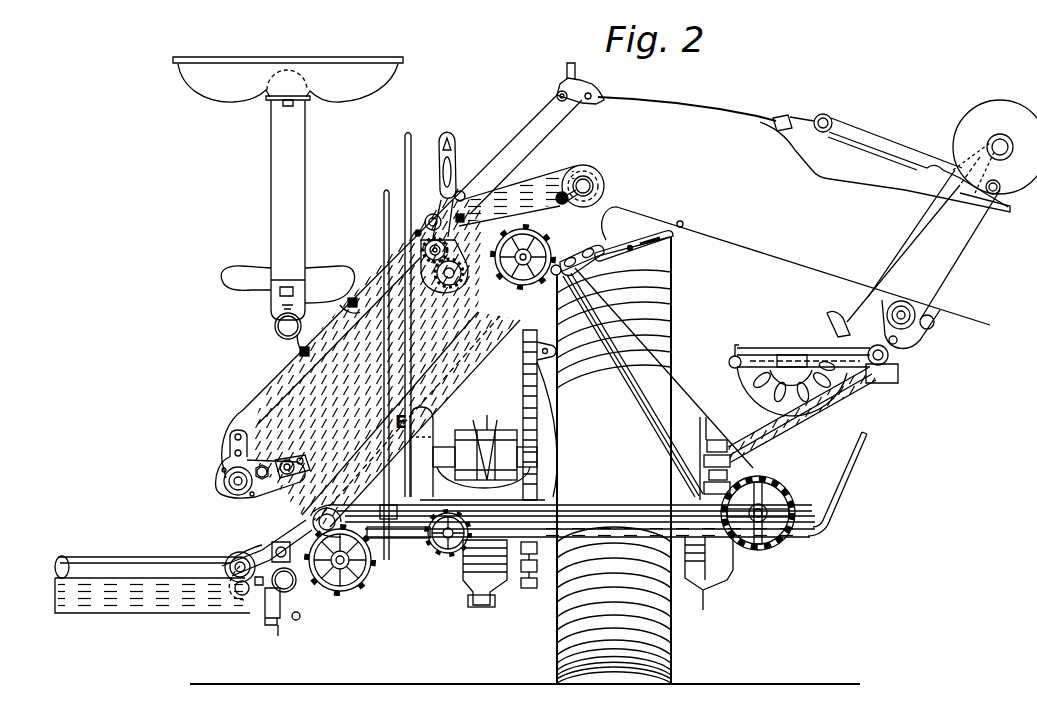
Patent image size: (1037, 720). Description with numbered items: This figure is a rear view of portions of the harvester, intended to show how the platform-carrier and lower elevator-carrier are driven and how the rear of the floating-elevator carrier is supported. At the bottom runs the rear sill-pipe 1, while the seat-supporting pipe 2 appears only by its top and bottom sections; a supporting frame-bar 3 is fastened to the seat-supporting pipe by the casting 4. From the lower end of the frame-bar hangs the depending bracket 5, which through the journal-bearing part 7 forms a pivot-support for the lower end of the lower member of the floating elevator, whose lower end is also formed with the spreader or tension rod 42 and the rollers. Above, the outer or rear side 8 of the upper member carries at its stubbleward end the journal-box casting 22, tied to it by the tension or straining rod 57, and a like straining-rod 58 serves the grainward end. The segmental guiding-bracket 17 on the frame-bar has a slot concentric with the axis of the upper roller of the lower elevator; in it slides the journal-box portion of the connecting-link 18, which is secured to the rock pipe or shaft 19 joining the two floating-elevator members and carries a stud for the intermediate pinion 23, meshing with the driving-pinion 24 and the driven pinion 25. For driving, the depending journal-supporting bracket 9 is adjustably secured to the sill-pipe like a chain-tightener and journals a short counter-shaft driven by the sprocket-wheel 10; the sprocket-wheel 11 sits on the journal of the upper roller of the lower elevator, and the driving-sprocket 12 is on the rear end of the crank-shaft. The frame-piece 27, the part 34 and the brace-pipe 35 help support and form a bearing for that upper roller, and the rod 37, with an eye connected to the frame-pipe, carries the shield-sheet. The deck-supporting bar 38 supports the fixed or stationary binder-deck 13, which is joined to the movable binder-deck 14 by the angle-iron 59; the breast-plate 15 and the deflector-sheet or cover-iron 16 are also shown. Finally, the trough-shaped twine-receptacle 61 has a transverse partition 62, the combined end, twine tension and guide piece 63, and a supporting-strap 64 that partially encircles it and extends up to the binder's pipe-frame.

The rear sill-pipe 1 is at (158, 575).
The seat-supporting pipe 2 is at (276, 327).
The supporting frame-bar 3 is at (246, 406).
The casting 4 is at (288, 206).
The depending bracket 5 is at (229, 453).
The journal-bearing part 7 is at (228, 488).
The outer or rear side of the upper member of the floating elevator 8 is at (531, 191).
The depending journal-supporting bracket 9 is at (306, 522).
The sprocket-wheel 10 is at (340, 571).
The sprocket-wheel 11 is at (511, 257).
The driving-sprocket 12 is at (768, 513).
The fixed or stationary binder-deck 13 is at (619, 216).
The movable binder-deck 14 is at (803, 266).
The breast-plate 15 is at (898, 224).
The deflector-sheet or cover-iron 16 is at (695, 108).
The segmental guiding-bracket 17 is at (441, 138).
The connecting-link 18 is at (445, 215).
The rock pipe or shaft 19 is at (397, 375).
The journal-box casting 22 is at (620, 180).
The intermediate pinion 23 is at (385, 241).
The driving-pinion 24 is at (436, 236).
The driven pinion 25 is at (422, 268).
The frame-piece 27 is at (467, 382).
The part 34 is at (612, 245).
The brace-pipe 35 is at (630, 404).
The rod 37 is at (278, 542).
The deck-supporting bar 38 is at (582, 224).
The spreader or tension rod 42 is at (262, 480).
The tension or straining rod 57 is at (563, 192).
The straining-rod 58 is at (467, 178).
The angle-iron 59 is at (682, 227).
The twine-receptacle 61 is at (802, 390).
The transverse partition 62 is at (792, 361).
The combined end, twine tension and guide piece 63 is at (740, 376).
The supporting-strap 64 is at (890, 362).